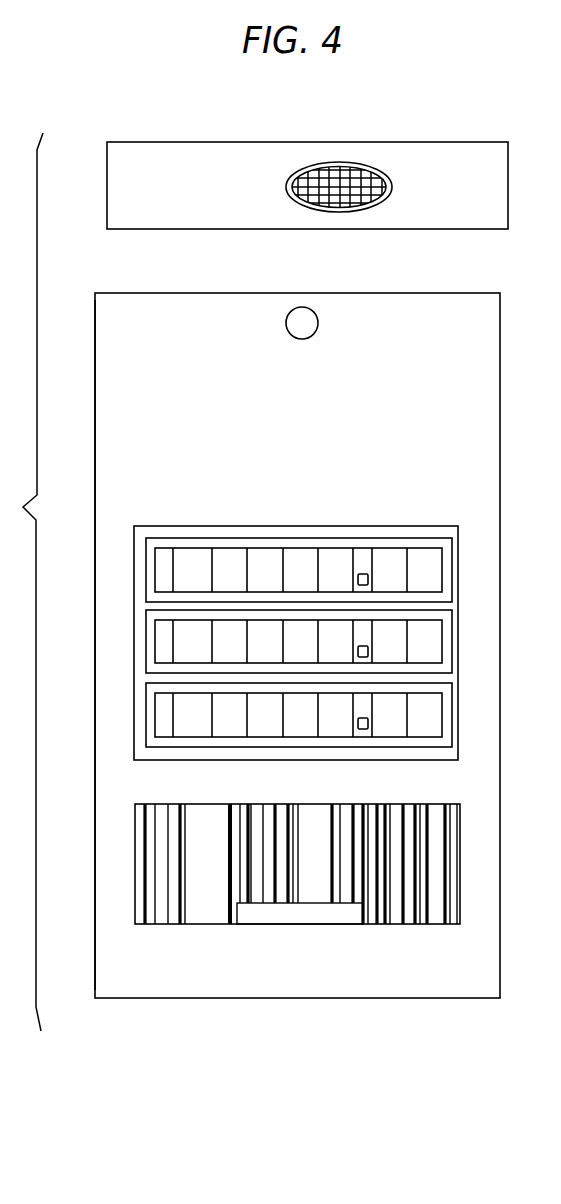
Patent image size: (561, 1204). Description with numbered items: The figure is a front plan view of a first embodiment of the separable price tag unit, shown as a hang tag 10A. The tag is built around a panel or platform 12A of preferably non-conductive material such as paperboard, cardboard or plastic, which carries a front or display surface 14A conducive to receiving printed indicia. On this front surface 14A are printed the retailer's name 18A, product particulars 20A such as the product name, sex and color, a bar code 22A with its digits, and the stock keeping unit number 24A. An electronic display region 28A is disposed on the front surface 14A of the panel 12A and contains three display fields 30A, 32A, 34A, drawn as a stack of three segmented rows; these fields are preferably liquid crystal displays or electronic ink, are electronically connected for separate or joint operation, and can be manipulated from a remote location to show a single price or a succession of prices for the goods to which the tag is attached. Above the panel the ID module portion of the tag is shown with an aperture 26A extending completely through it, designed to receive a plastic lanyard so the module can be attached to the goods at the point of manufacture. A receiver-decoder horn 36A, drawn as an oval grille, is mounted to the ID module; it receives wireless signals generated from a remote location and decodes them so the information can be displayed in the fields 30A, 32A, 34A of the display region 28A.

The garment label 10A is at (273, 998).
The panel 12A is at (95, 751).
The front surface 14A is at (96, 478).
The retailer's name 18A is at (390, 361).
The product information 20A is at (398, 493).
The bar code 22A is at (198, 804).
The SKU number 24A is at (380, 950).
The aperture 26A is at (286, 323).
The electronic display region 28A is at (134, 545).
The display field 30A is at (146, 583).
The display field 32A is at (146, 655).
The display field 34A is at (146, 731).
The receiver-decoder horn 36A is at (338, 162).